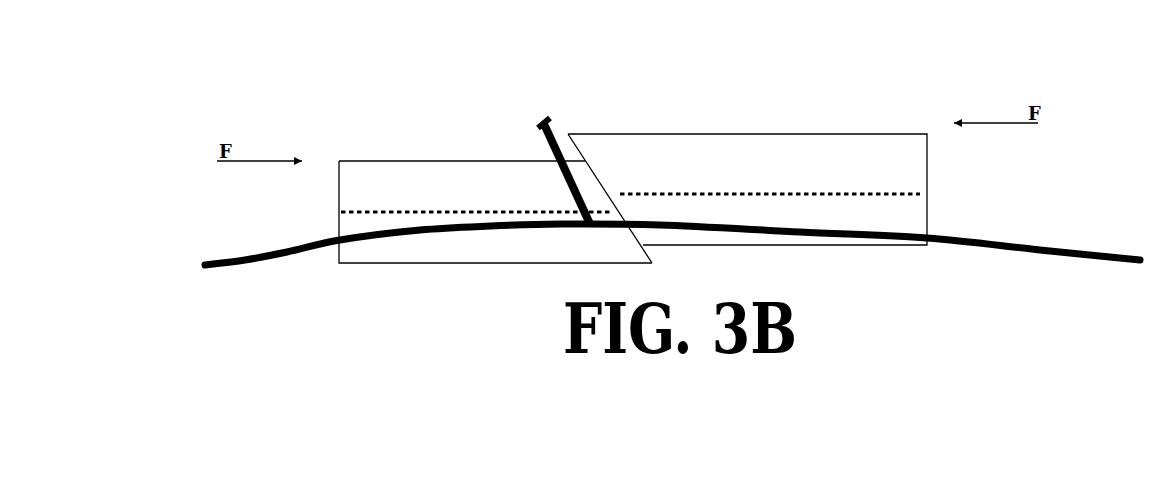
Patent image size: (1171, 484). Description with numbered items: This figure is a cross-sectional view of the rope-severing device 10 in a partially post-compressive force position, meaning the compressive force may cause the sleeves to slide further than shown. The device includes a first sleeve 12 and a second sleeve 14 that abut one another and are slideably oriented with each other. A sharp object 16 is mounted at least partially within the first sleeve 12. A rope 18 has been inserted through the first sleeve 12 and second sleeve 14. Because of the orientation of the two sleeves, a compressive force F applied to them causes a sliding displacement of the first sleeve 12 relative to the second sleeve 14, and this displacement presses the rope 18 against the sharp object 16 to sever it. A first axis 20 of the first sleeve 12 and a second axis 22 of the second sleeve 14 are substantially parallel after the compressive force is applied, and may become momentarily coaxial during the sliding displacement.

The rope-severing device 10 is at (368, 87).
The first sleeve 12 is at (478, 156).
The second sleeve 14 is at (714, 131).
The sharp object 16 is at (550, 117).
The rope 18 is at (287, 262).
The first axis 20 is at (436, 216).
The second axis 22 is at (837, 196).